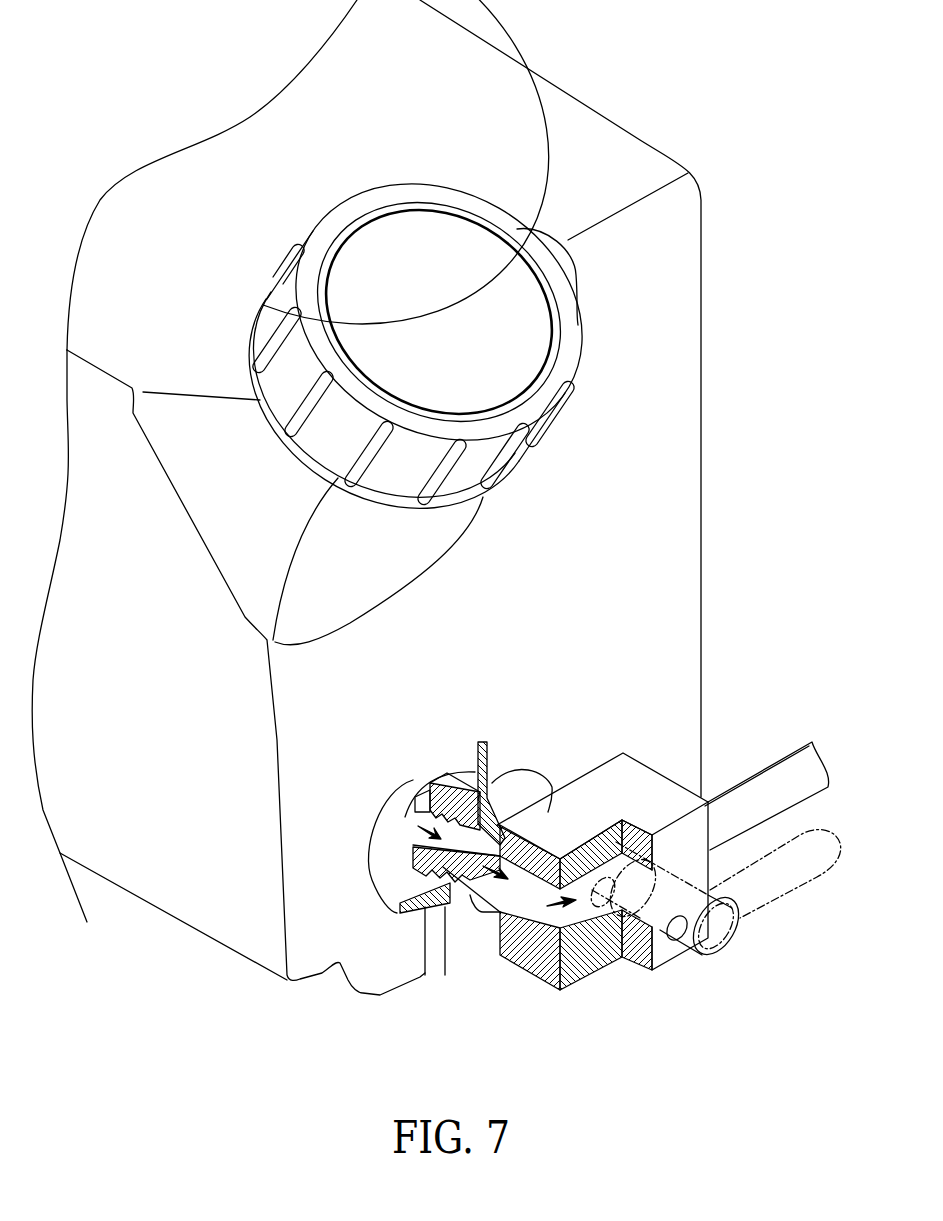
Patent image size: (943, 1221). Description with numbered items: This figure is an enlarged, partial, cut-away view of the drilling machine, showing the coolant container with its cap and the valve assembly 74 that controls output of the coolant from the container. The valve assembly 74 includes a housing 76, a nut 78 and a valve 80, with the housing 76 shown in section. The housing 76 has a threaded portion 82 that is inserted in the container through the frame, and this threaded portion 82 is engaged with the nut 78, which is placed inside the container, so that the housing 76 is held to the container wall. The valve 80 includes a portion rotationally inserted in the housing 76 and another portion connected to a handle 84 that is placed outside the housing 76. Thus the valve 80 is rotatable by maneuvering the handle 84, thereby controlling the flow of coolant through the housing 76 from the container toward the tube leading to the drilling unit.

The valve assembly 74 is at (710, 790).
The housing 76 is at (597, 773).
The nut 78 is at (467, 785).
The valve 80 is at (720, 937).
The threaded portion 82 is at (413, 797).
The handle 84 is at (803, 877).